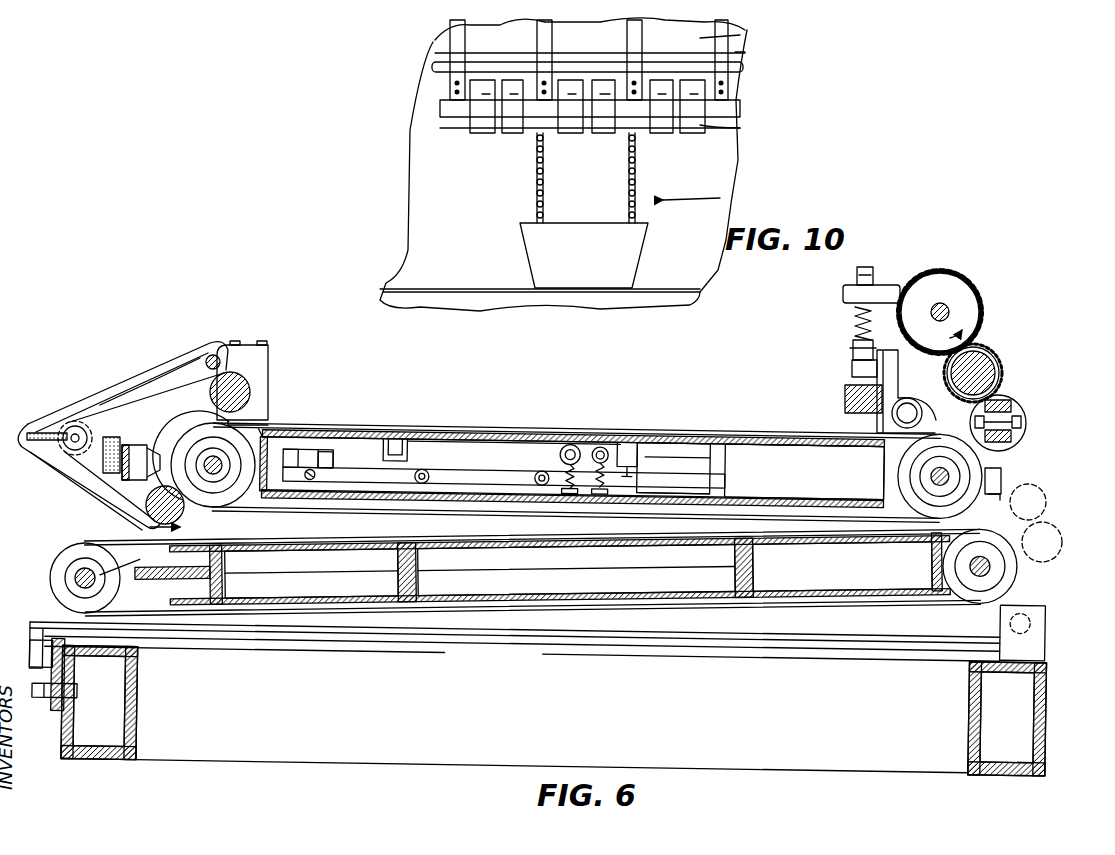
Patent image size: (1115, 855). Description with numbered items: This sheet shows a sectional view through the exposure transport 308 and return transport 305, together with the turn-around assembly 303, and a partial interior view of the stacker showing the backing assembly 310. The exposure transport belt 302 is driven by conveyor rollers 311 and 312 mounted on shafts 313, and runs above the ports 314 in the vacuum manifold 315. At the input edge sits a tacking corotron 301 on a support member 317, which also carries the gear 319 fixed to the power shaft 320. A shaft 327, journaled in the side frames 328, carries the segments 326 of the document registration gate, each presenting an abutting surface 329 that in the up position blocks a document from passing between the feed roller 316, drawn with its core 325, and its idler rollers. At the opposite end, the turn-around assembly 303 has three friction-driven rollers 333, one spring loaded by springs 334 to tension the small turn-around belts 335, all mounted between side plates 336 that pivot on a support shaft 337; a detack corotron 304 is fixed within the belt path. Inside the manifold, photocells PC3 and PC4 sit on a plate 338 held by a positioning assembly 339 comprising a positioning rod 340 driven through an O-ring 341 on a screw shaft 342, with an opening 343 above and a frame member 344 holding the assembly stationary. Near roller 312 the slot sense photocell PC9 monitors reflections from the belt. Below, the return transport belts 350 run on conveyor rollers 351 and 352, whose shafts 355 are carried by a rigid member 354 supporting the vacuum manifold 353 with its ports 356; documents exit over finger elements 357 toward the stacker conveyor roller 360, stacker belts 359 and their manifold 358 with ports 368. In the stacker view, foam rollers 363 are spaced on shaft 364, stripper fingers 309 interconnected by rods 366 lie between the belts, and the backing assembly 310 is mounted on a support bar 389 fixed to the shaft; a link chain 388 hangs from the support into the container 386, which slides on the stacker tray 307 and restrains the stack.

In FIG. 6, the corotron 301 is at (845, 400).
In FIG. 6, the exposure transport belt 302 is at (760, 428).
In FIG. 6, the turn-around assembly 303 is at (78, 393).
In FIG. 6, the detack corotron 304 is at (130, 478).
In FIG. 6, the return transport 305 is at (528, 625).
In FIG. 10, the stacker tray 307 is at (440, 288).
In FIG. 6, the exposure transport 308 is at (462, 420).
In FIG. 10, the stripper fingers 309 is at (705, 35).
In FIG. 10, the backing assembly 310 is at (775, 205).
In FIG. 6, the conveyor roller 311 is at (266, 437).
In FIG. 6, the conveyor roller 312 is at (1000, 451).
In FIG. 6, the shafts 313 is at (268, 438).
In FIG. 6, the ports 314 is at (710, 440).
In FIG. 6, the vacuum manifold 315 is at (848, 462).
In FIG. 6, the feed roller 316 is at (1001, 366).
In FIG. 6, the support member 317 is at (852, 368).
In FIG. 6, the gear 319 is at (963, 300).
In FIG. 6, the power shaft 320 is at (948, 312).
In FIG. 6, the roller core 325 is at (990, 380).
In FIG. 6, the document registration gate segments 326 is at (1012, 438).
In FIG. 6, the shaft 327 is at (1021, 422).
In FIG. 6, the side frames 328 is at (258, 370).
In FIG. 6, the abutting surface 329 is at (1010, 406).
In FIG. 6, the turn-around rollers 333 is at (237, 374).
In FIG. 6, the springs 334 is at (60, 448).
In FIG. 6, the turn-around belts 335 is at (170, 385).
In FIG. 6, the side plates 336 is at (123, 392).
In FIG. 6, the support shaft 337 is at (215, 355).
In FIG. 6, the plate 338 is at (318, 455).
In FIG. 6, the positioning assembly 339 is at (702, 481).
In FIG. 6, the positioning rod 340 is at (455, 467).
In FIG. 6, the O-ring 341 is at (540, 466).
In FIG. 6, the screw shaft 342 is at (600, 440).
In FIG. 6, the opening 343 is at (388, 433).
In FIG. 6, the frame member 344 is at (707, 457).
In FIG. 6, the return transport belts 350 is at (78, 543).
In FIG. 6, the conveyor roller 351 is at (120, 588).
In FIG. 6, the conveyor roller 352 is at (1010, 587).
In FIG. 6, the vacuum manifold 353 is at (395, 563).
In FIG. 6, the rigid member 354 is at (1035, 634).
In FIG. 6, the shafts 355 is at (100, 575).
In FIG. 6, the ports 356 is at (545, 548).
In FIG. 6, the finger elements 357 is at (1037, 499).
In FIG. 10, the vacuum manifold 358 is at (735, 52).
In FIG. 10, the stacker transport belts 359 is at (735, 30).
In FIG. 6, the conveyor roller 360 is at (1050, 540).
In FIG. 10, the foam rollers 363 is at (688, 135).
In FIG. 10, the shaft 364 is at (740, 110).
In FIG. 10, the rods 366 is at (742, 67).
In FIG. 10, the ports 368 is at (545, 76).
In FIG. 10, the container 386 is at (535, 255).
In FIG. 10, the link chain 388 is at (537, 165).
In FIG. 10, the support bar 389 is at (460, 133).
In FIG. 6, the photocell PC3 is at (330, 460).
In FIG. 6, the photocell PC4 is at (312, 450).
In FIG. 6, the slot sense photocell PC9 is at (1003, 480).